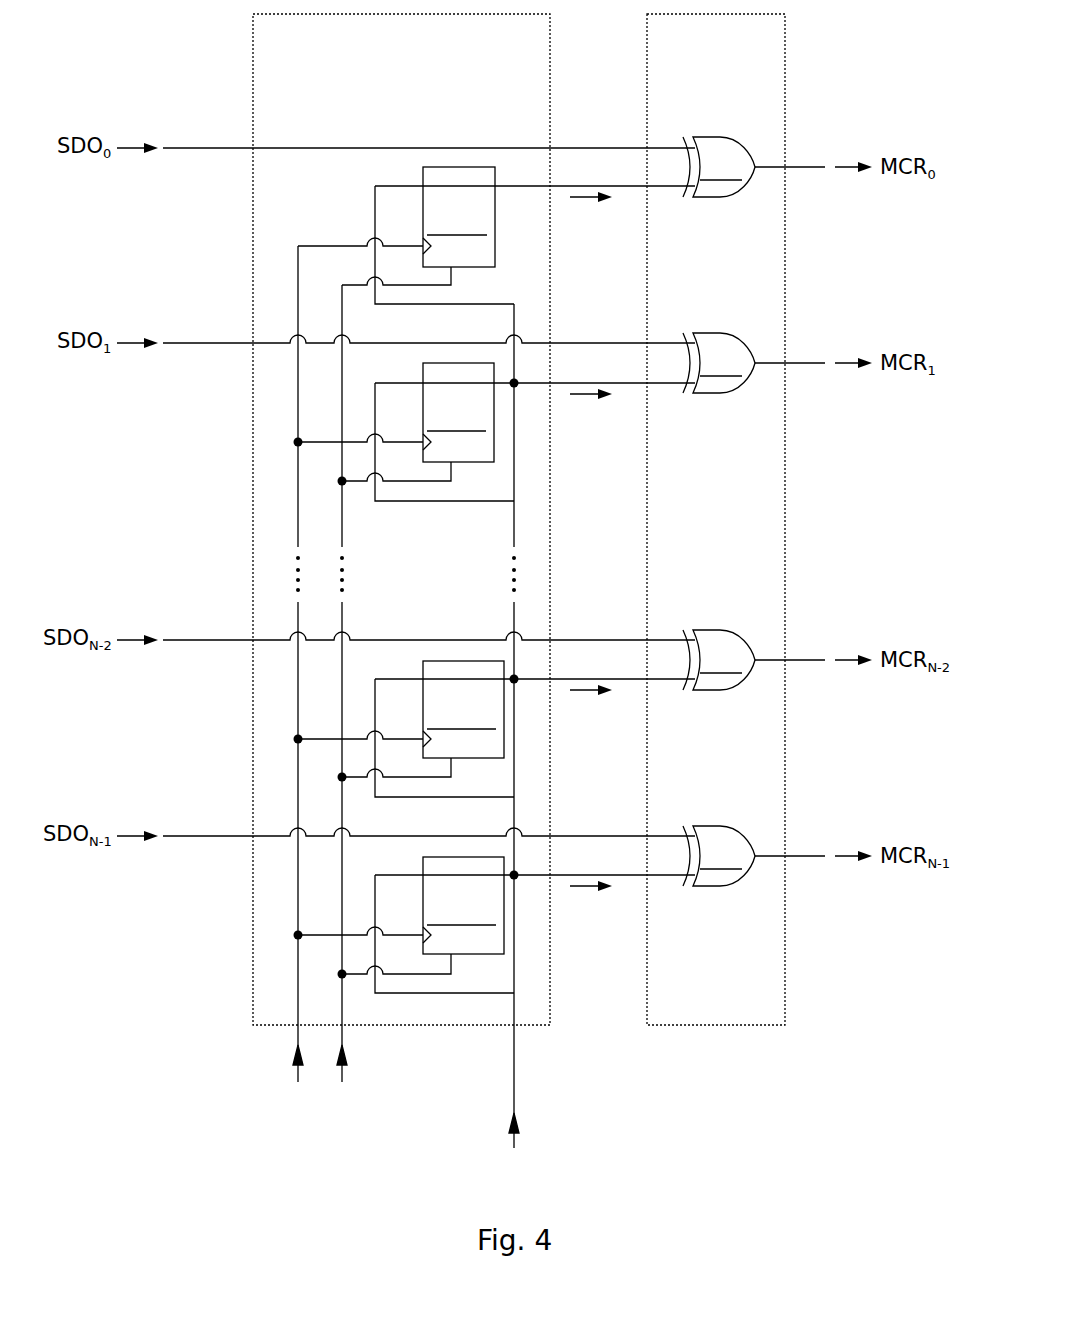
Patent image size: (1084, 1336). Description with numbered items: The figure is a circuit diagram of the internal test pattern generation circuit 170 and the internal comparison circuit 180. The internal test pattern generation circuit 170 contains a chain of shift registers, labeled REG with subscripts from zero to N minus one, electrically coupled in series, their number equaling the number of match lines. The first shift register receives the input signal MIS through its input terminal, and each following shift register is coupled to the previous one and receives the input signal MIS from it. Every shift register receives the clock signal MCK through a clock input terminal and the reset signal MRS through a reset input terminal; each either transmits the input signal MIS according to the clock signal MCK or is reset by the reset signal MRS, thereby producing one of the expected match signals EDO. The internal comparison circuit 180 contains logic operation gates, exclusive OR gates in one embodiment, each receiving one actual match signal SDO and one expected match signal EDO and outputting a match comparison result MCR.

The internal test pattern generation circuit 170 is at (395, 62).
The internal comparison circuit 180 is at (709, 62).
The clock signal MCK is at (280, 679).
The reset signal MRS is at (348, 699).
The input signal MIS is at (512, 741).